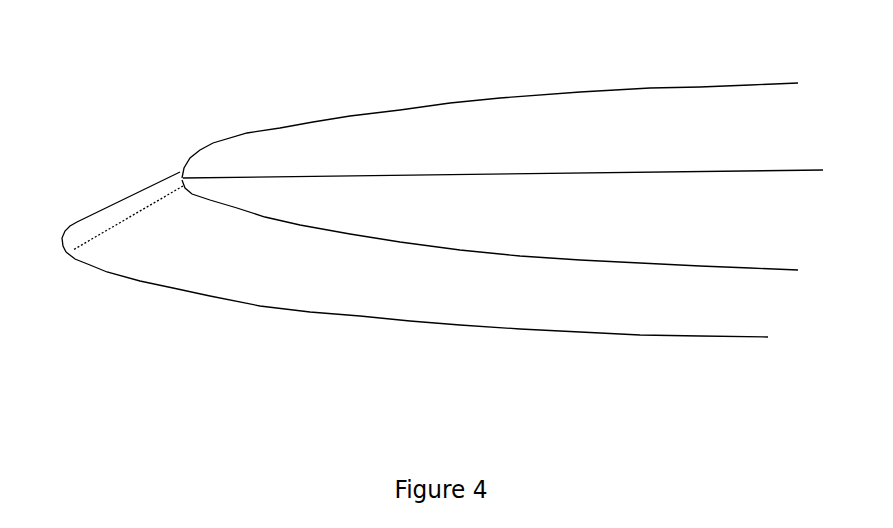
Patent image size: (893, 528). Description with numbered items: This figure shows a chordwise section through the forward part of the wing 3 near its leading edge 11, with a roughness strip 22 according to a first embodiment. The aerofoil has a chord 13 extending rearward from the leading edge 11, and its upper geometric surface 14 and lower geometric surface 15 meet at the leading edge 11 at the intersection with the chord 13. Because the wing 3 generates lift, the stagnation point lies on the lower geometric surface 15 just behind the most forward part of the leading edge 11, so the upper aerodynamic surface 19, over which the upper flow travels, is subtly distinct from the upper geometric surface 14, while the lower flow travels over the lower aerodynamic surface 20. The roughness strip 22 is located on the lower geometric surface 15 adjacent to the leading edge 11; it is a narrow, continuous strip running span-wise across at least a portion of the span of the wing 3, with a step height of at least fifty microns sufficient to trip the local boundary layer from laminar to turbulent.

The wing 3 is at (203, 127).
The leading edge 11 is at (199, 174).
The chord 13 is at (765, 170).
The upper geometric surface 14 is at (425, 107).
The lower geometric surface 15 is at (358, 308).
The upper aerodynamic surface 19 is at (90, 237).
The lower aerodynamic surface 20 is at (95, 253).
The roughness strip 22 is at (129, 226).